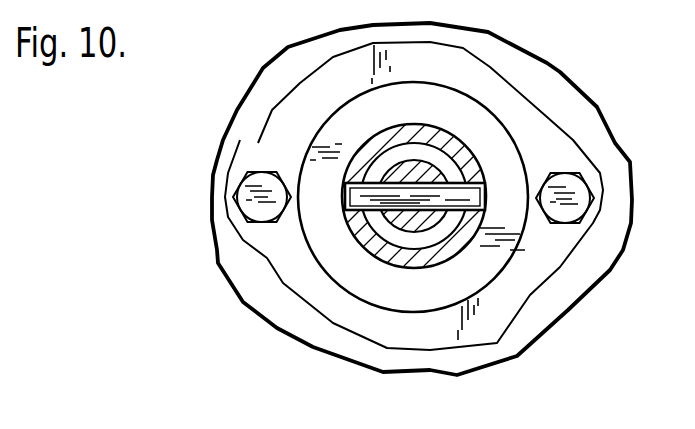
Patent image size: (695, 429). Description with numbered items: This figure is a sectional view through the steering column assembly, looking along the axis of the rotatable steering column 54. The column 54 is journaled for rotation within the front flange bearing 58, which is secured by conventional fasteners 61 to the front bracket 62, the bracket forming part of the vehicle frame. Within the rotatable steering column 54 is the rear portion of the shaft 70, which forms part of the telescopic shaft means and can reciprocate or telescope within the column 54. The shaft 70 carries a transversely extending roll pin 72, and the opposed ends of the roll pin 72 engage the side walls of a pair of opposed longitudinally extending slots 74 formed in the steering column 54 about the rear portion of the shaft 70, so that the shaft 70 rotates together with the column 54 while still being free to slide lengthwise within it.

The rotatable steering column 54 is at (377, 243).
The front flange bearing 58 is at (435, 338).
The fasteners 61 is at (238, 196).
The front bracket 62 is at (566, 102).
The shaft 70 is at (421, 166).
The roll pin 72 is at (479, 201).
The longitudinally extending slots 74 is at (352, 188).